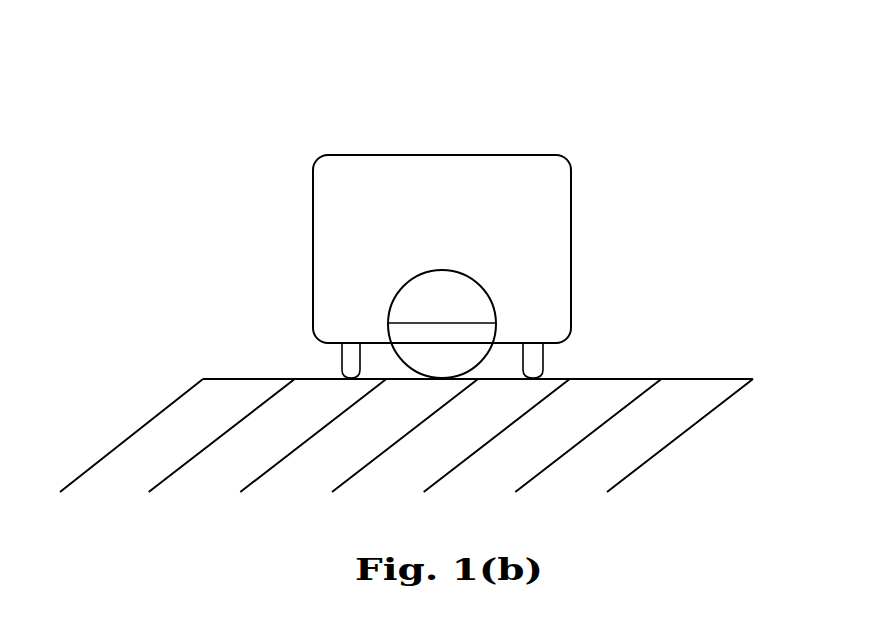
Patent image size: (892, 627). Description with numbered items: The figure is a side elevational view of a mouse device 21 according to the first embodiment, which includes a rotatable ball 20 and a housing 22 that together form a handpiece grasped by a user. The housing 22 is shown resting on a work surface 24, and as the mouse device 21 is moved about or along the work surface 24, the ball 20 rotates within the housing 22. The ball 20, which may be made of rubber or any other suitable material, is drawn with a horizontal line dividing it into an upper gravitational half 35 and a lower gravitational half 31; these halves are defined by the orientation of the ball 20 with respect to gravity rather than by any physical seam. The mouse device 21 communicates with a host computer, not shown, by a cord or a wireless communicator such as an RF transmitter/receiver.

The mouse device 21 is at (285, 113).
The housing 22 is at (548, 180).
The ball 20 is at (442, 324).
The lower gravitational half 31 is at (473, 332).
The upper gravitational half 35 is at (437, 278).
The work surface 24 is at (295, 413).